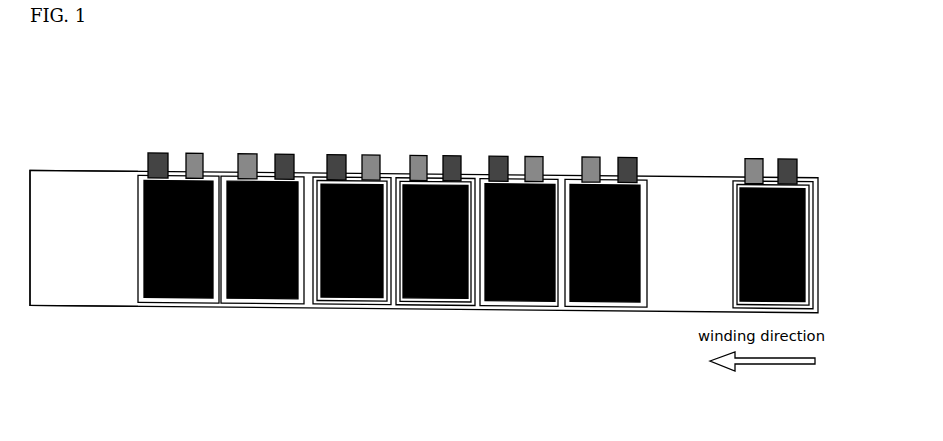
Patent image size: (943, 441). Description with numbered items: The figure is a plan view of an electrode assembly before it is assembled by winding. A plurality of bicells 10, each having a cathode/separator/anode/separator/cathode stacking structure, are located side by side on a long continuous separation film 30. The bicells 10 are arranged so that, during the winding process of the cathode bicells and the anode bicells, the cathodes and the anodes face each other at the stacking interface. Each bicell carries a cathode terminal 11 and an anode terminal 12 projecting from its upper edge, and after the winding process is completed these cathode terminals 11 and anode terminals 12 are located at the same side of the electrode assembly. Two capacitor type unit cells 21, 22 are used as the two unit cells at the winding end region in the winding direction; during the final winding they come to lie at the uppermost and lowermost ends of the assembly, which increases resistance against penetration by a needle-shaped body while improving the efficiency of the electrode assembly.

The bicell 10 is at (378, 318).
The cathode terminal 11 is at (338, 153).
The anode terminal 12 is at (538, 156).
The capacitor type unit cell 21 is at (183, 294).
The capacitor type unit cell 22 is at (254, 294).
The separation film 30 is at (80, 178).